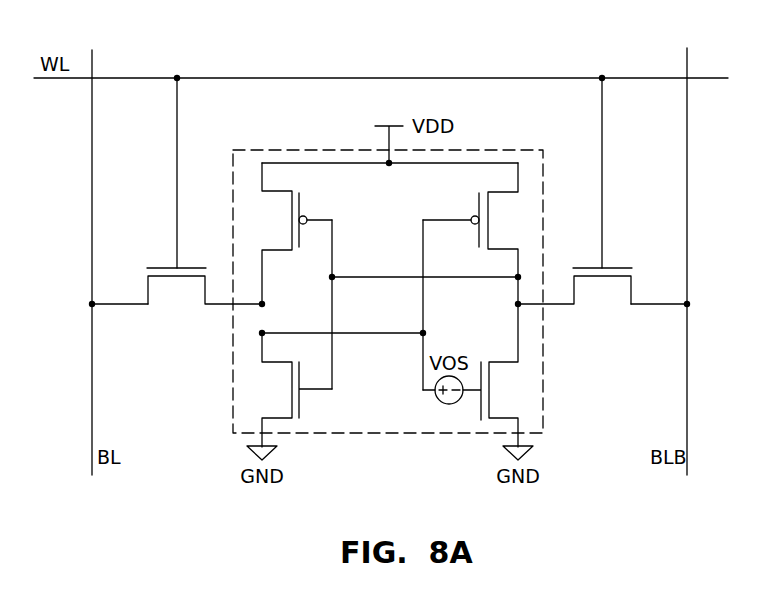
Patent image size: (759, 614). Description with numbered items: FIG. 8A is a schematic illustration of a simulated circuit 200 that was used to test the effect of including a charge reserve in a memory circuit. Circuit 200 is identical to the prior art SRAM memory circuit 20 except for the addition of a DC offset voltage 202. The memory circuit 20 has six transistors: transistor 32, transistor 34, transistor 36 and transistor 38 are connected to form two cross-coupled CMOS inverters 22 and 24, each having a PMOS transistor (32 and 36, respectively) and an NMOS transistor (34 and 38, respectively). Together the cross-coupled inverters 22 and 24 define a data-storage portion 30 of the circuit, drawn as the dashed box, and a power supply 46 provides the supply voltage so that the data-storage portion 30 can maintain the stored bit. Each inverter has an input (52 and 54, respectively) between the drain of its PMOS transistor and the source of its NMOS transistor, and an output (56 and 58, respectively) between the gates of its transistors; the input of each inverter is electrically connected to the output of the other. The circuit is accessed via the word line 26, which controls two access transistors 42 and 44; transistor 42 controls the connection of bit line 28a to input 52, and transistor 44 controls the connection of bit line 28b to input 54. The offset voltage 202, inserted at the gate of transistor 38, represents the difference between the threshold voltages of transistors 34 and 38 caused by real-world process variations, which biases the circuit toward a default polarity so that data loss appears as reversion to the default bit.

The simulated circuit 200 is at (630, 42).
The memory circuit 20 is at (152, 532).
The word line 26 is at (507, 78).
The bit line 28a is at (90, 383).
The bit line 28b is at (687, 383).
The data-storage portion 30 is at (543, 383).
The access transistor 42 is at (190, 310).
The access transistor 44 is at (613, 310).
The power supply 46 is at (375, 126).
The transistor 32 is at (279, 232).
The transistor 36 is at (518, 232).
The transistor 34 is at (278, 400).
The transistor 38 is at (518, 401).
The input 52 is at (265, 290).
The input 54 is at (515, 290).
The output 56 is at (333, 291).
The output 58 is at (423, 303).
The inverter 22 is at (316, 451).
The inverter 24 is at (460, 452).
The DC offset voltage 202 is at (447, 404).